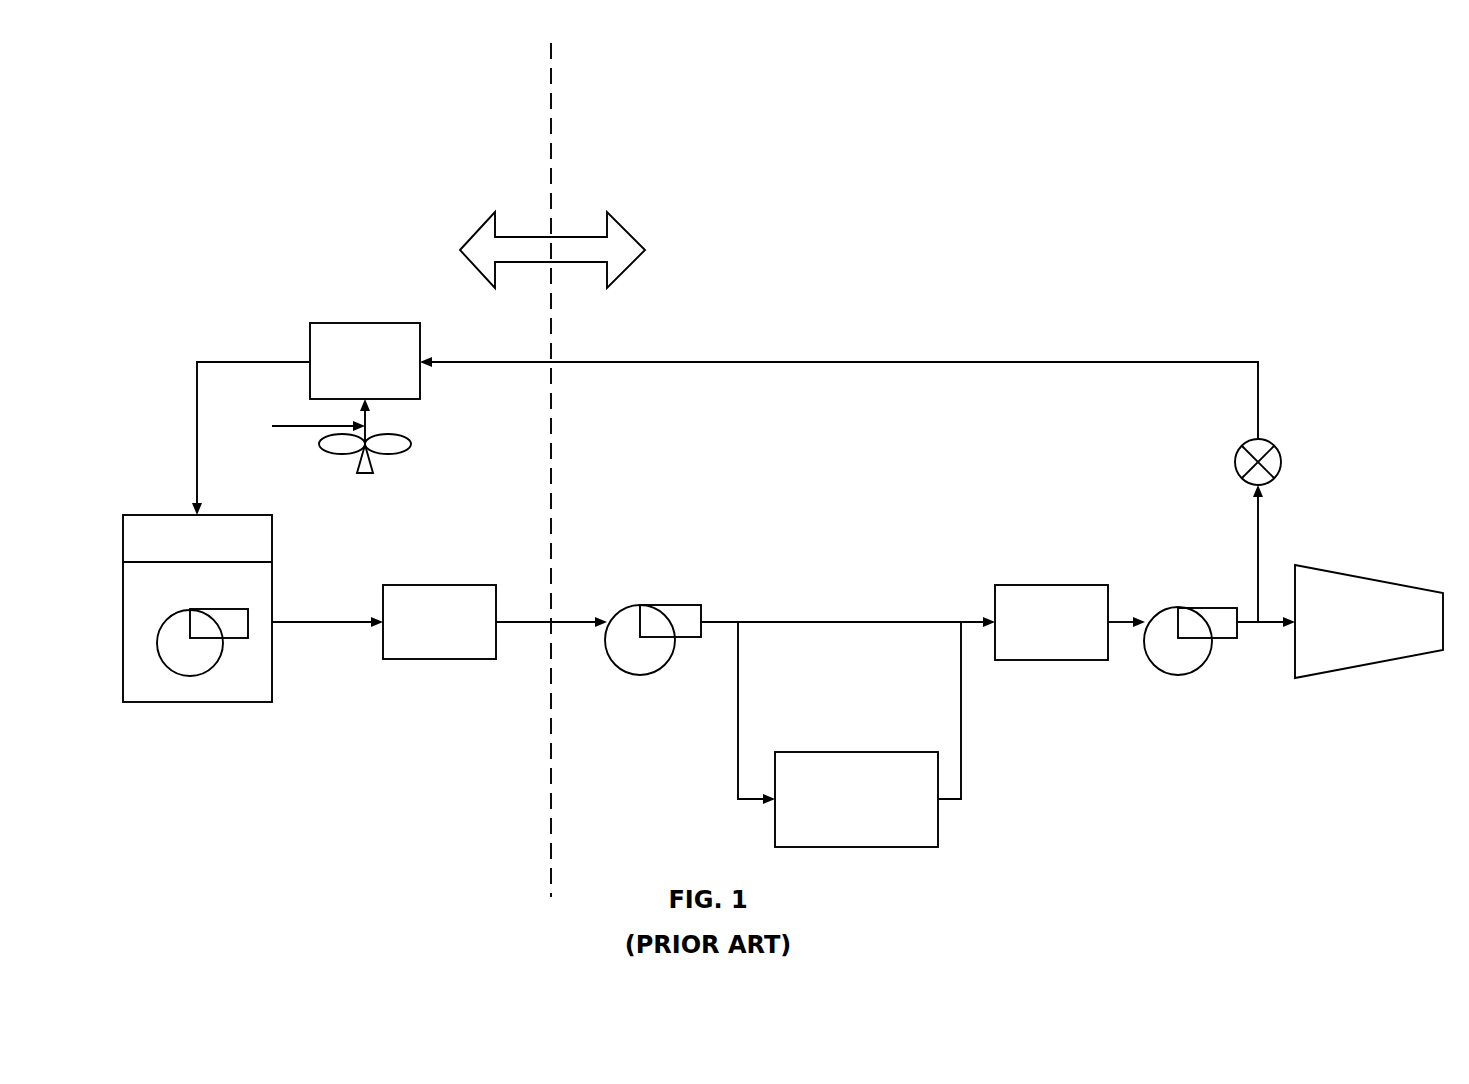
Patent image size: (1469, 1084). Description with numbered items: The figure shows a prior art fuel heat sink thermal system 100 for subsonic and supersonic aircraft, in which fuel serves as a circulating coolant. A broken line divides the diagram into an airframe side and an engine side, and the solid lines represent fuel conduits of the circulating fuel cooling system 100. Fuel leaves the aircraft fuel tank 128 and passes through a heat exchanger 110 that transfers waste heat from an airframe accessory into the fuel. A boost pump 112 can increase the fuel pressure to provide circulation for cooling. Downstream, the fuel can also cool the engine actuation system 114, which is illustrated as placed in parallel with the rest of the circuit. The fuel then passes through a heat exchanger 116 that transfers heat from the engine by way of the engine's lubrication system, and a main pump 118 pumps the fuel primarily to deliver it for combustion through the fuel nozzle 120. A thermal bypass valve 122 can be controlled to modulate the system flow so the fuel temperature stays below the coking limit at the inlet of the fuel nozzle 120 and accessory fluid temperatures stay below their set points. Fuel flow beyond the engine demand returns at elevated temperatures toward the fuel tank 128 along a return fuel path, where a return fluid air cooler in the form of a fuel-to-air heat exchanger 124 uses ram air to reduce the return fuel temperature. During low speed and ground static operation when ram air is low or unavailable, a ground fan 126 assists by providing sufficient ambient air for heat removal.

The fuel heat sink thermal system 100 is at (1193, 115).
The heat exchanger 110 is at (438, 585).
The boost pump 112 is at (665, 605).
The engine actuation system 114 is at (867, 752).
The heat exchanger 116 is at (1073, 660).
The main pump 118 is at (1167, 608).
The fuel nozzle 120 is at (1370, 665).
The thermal bypass valve 122 is at (1241, 449).
The fuel-to-air heat exchanger 124 is at (310, 323).
The fan 126 is at (368, 476).
The fuel tank 128 is at (188, 702).